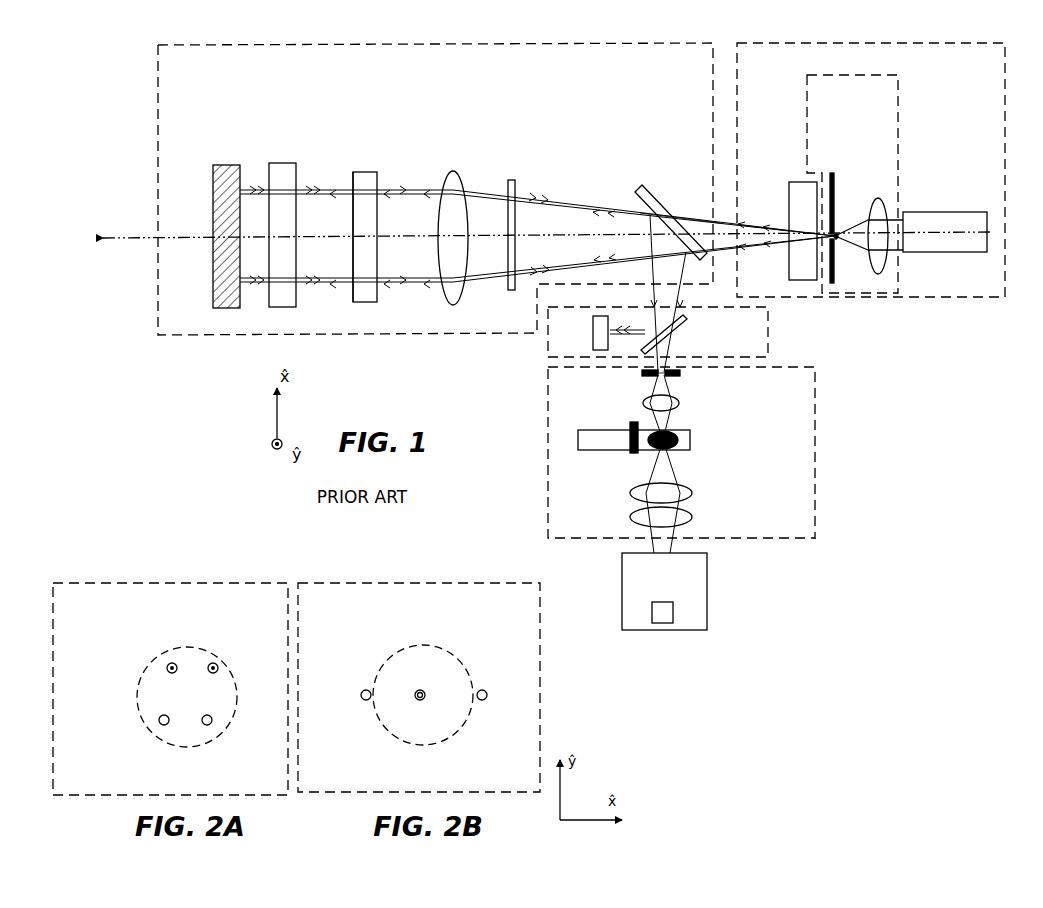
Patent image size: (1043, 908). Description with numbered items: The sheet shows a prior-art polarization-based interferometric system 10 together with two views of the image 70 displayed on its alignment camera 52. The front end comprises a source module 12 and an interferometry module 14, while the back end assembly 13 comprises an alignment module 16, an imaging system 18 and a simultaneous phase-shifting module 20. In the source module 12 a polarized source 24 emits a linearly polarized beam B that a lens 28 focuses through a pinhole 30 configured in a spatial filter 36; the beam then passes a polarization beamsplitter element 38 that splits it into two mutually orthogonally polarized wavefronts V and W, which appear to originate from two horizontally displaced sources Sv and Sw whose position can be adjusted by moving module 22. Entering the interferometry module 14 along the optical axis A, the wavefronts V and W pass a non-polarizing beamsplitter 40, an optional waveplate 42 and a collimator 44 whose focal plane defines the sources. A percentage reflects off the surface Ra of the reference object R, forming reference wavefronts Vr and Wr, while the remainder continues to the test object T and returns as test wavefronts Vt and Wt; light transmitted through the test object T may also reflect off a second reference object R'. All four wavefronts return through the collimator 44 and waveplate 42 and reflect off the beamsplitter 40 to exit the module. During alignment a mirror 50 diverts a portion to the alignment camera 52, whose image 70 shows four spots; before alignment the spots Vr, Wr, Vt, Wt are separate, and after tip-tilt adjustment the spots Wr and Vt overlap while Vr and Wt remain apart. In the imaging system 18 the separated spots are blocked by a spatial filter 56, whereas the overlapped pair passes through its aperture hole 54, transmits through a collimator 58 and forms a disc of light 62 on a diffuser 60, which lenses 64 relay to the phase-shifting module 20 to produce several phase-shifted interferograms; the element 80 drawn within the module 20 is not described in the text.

In FIG. 1, the interferometric system 10 is at (442, 392).
In FIG. 1, the source module 12 is at (708, 30).
In FIG. 1, the back end assembly 13 is at (812, 587).
In FIG. 1, the interferometry module 14 is at (705, 43).
In FIG. 1, the alignment module 16 is at (773, 332).
In FIG. 1, the imaging system 18 is at (820, 486).
In FIG. 1, the simultaneous phase-shifting module 20 is at (710, 567).
In FIG. 1, the source position adjustment module 22 is at (900, 85).
In FIG. 1, the polarized source 24 is at (962, 210).
In FIG. 1, the lens 28 is at (886, 192).
In FIG. 1, the pinhole 30 is at (850, 214).
In FIG. 1, the spatial filter 36 is at (833, 210).
In FIG. 1, the polarization beamsplitter element 38 is at (800, 180).
In FIG. 1, the non-polarizing beamsplitter 40 is at (640, 188).
In FIG. 1, the quarter or half wave waveplate 42 is at (515, 178).
In FIG. 1, the collimator 44 is at (441, 168).
In FIG. 1, the mirror 50 is at (692, 322).
In FIG. 1, the alignment camera 52 is at (591, 341).
In FIG. 1, the aperture hole 54 is at (652, 378).
In FIG. 2A, the aperture hole 54 is at (148, 735).
In FIG. 2B, the aperture hole 54 is at (386, 730).
In FIG. 1, the spatial filter 56 is at (686, 376).
In FIG. 1, the collimator 58 is at (686, 407).
In FIG. 1, the diffuser 60 is at (698, 440).
In FIG. 1, the disc of light 62 is at (680, 449).
In FIG. 1, the lenses 64 is at (631, 494).
In FIG. 2A, the image 70 is at (185, 582).
In FIG. 2B, the image 70 is at (418, 582).
In FIG. 1, the detector element 80 is at (676, 612).
In FIG. 1, the optical axis A is at (133, 249).
In FIG. 1, the linearly polarized light beam B is at (896, 214).
In FIG. 1, the reference object R is at (374, 202).
In FIG. 1, the second reference object R' is at (217, 193).
In FIG. 1, the reference surface Ra is at (350, 175).
In FIG. 1, the test object T is at (280, 162).
In FIG. 1, the polarized wavefront V is at (765, 225).
In FIG. 1, the polarized wavefront W is at (690, 214).
In FIG. 1, the source Sv is at (838, 226).
In FIG. 1, the source Sw is at (840, 248).
In FIG. 2A, the reference wavefront Vr is at (168, 662).
In FIG. 2B, the reference wavefront Vr is at (361, 690).
In FIG. 2A, the reference wavefront Wr is at (209, 662).
In FIG. 2B, the reference wavefront Wr is at (414, 690).
In FIG. 2A, the test wavefront Vt is at (167, 726).
In FIG. 2B, the test wavefront Vt is at (426, 700).
In FIG. 2A, the test wavefront Wt is at (211, 726).
In FIG. 2B, the test wavefront Wt is at (487, 702).